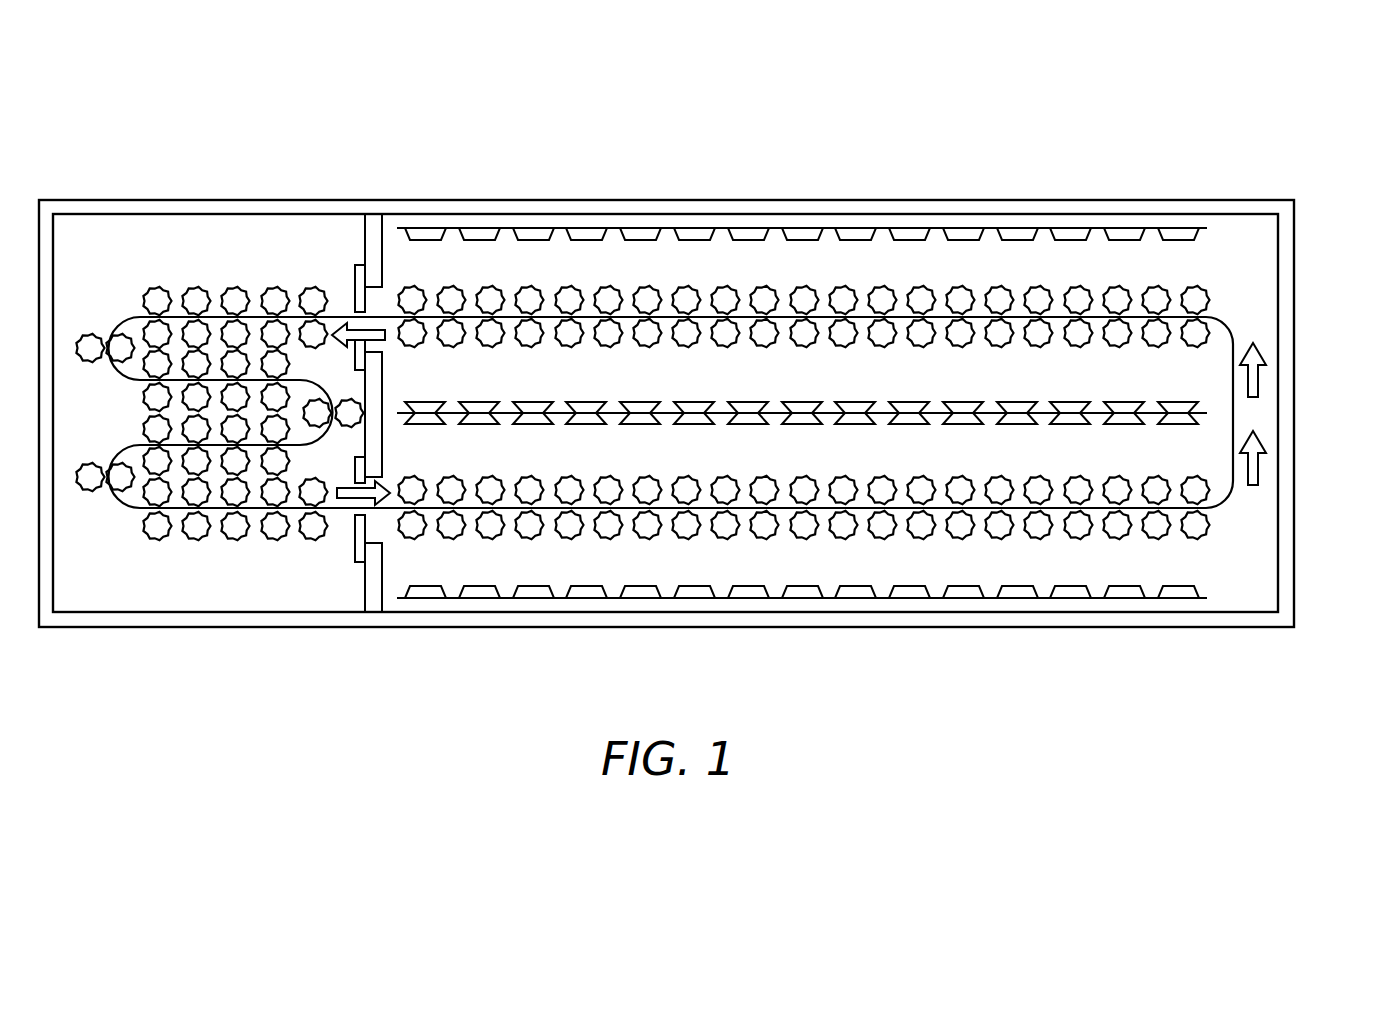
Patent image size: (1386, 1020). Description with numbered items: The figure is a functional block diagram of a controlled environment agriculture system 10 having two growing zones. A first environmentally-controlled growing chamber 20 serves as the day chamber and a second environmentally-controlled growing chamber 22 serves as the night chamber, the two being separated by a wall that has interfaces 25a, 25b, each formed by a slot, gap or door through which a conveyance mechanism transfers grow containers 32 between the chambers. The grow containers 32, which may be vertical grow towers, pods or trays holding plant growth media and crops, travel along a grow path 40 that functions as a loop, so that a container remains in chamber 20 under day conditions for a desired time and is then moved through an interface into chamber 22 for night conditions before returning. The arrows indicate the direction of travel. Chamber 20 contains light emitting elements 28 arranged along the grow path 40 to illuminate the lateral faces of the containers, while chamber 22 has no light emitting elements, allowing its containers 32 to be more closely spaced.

The controlled environment agriculture system 10 is at (212, 146).
The first environmentally-controlled growing chamber 20 is at (906, 638).
The second environmentally-controlled growing chamber 22 is at (181, 637).
The interface 25a is at (377, 297).
The interface 25b is at (377, 524).
The light emitting elements 28 is at (725, 412).
The grow containers 32 is at (1202, 526).
The grow path 40 is at (1234, 413).